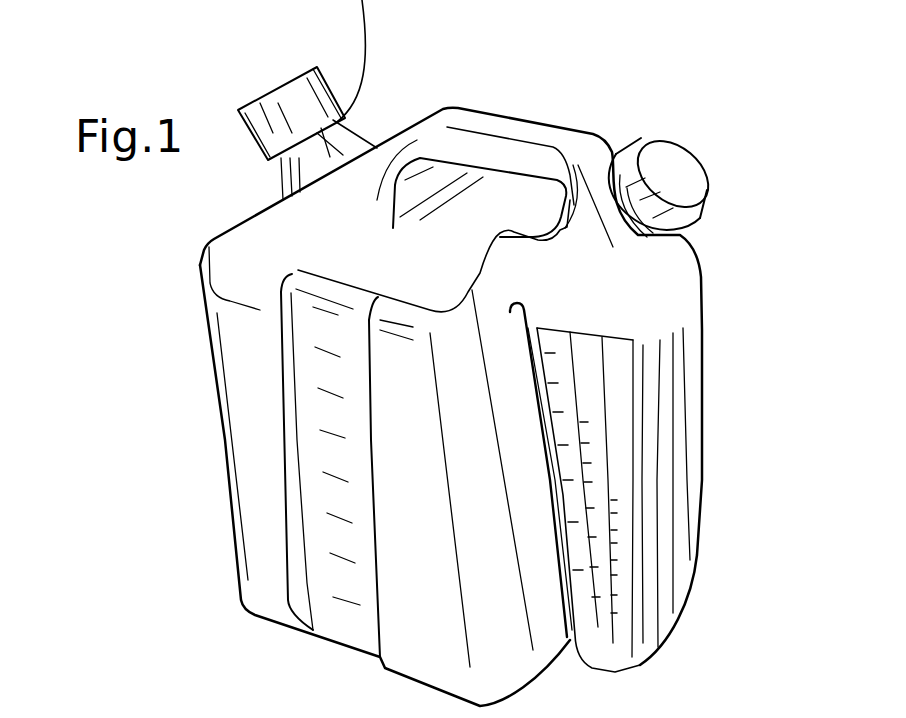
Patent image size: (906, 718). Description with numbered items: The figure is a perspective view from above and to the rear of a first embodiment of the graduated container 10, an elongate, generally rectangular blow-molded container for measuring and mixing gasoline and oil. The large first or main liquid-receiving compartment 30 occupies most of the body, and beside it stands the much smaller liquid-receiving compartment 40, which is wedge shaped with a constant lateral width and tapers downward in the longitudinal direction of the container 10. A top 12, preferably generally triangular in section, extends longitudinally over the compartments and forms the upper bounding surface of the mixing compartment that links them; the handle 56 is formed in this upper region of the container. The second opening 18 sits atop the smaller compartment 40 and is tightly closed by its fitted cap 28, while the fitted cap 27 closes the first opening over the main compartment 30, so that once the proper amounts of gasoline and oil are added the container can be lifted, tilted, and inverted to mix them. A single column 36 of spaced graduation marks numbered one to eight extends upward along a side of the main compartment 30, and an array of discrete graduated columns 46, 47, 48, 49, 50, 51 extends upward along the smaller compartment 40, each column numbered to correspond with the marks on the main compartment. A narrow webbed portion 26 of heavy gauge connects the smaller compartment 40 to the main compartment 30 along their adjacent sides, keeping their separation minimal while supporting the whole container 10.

The graduated container 10 is at (160, 455).
The top 12 is at (347, 227).
The second opening 18 is at (600, 165).
The webbed portion 26 is at (567, 580).
The cap 27 is at (295, 113).
The cap 28 is at (673, 163).
The main liquid-receiving compartment 30 is at (267, 492).
The column of graduation marks 36 is at (343, 603).
The smaller liquid-receiving compartment 40 is at (606, 481).
The graduated column 46 is at (556, 305).
The graduated column 47 is at (588, 315).
The graduated column 48 is at (627, 317).
The graduated column 49 is at (660, 343).
The graduated column 50 is at (673, 360).
The graduated column 51 is at (693, 372).
The handle 56 is at (472, 143).